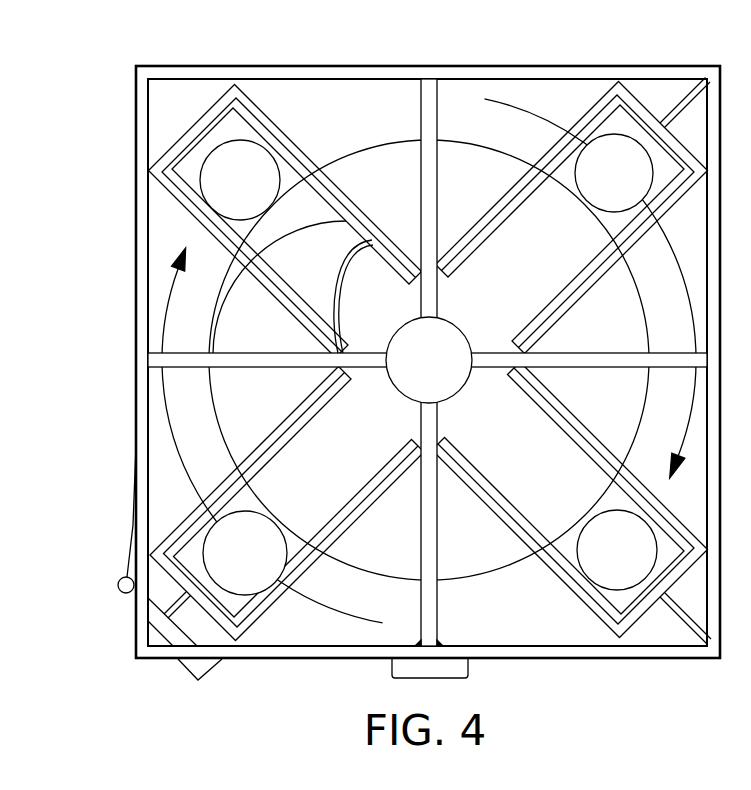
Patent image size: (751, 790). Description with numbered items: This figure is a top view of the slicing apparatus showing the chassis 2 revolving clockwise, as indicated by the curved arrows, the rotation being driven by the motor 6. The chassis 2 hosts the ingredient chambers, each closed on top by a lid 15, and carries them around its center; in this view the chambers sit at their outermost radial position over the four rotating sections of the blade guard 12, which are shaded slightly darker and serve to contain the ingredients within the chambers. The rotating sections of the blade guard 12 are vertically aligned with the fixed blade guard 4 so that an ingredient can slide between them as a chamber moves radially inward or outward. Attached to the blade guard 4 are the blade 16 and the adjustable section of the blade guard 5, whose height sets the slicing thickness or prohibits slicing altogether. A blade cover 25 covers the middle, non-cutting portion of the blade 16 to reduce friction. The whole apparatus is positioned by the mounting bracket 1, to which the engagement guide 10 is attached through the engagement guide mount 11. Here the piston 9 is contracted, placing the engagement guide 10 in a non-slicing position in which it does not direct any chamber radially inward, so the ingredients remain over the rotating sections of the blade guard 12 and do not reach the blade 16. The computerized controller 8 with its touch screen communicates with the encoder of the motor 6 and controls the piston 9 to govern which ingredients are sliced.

The mounting bracket 1 is at (508, 65).
The chassis 2 is at (617, 90).
The blade guard 4 is at (456, 204).
The adjustable section of the blade guard 5 is at (284, 216).
The motor 6 is at (421, 373).
The computerized controller 8 is at (392, 675).
The piston 9 is at (127, 595).
The engagement guide 10 is at (127, 530).
The engagement guide mount 11 is at (135, 446).
The rotating portion of the blade guard 12 is at (228, 133).
The lid 15 is at (228, 188).
The blade 16 is at (337, 273).
The blade cover 25 is at (354, 300).